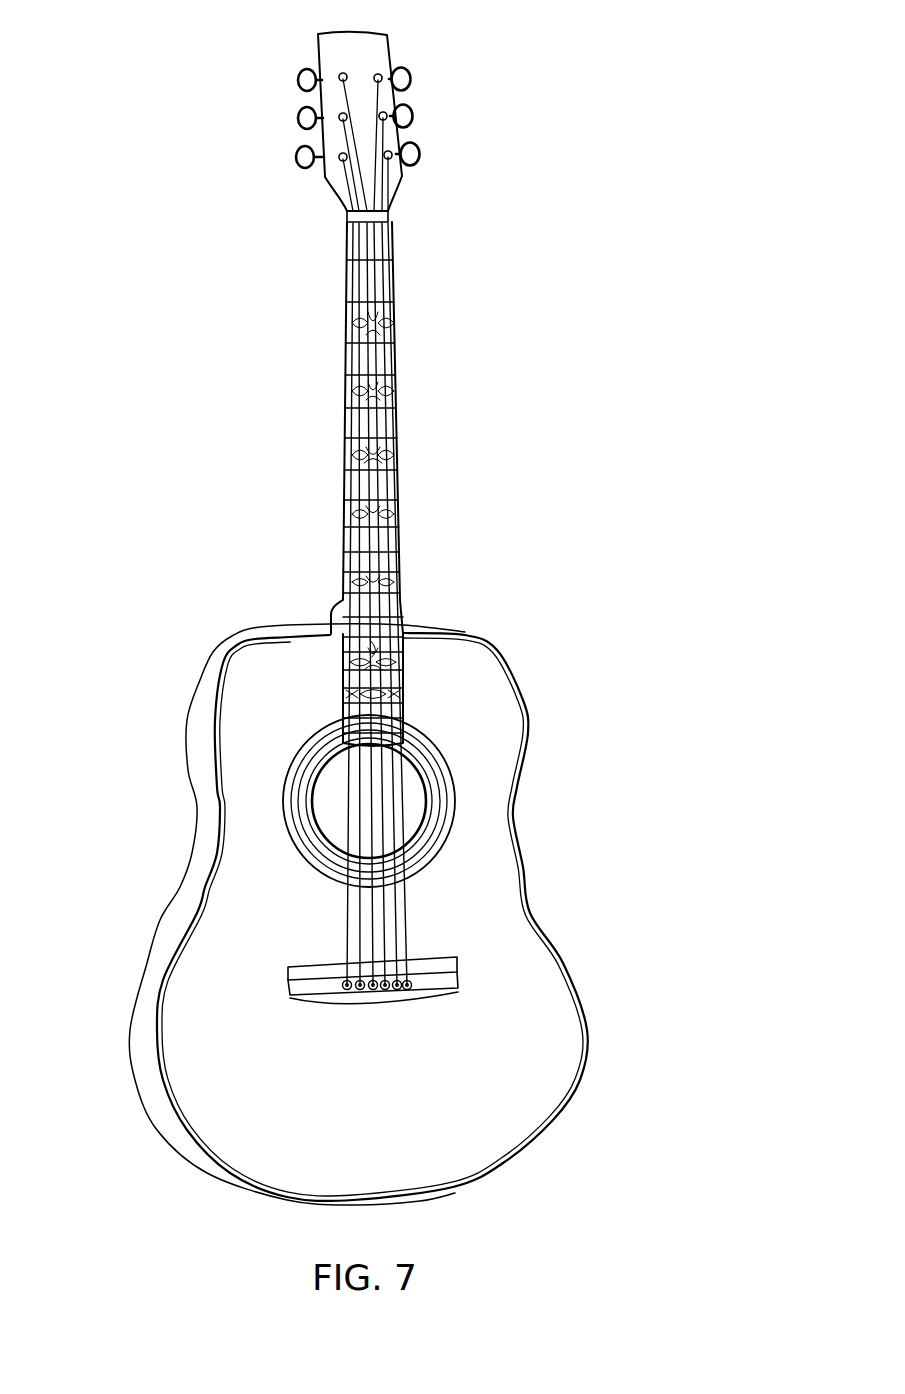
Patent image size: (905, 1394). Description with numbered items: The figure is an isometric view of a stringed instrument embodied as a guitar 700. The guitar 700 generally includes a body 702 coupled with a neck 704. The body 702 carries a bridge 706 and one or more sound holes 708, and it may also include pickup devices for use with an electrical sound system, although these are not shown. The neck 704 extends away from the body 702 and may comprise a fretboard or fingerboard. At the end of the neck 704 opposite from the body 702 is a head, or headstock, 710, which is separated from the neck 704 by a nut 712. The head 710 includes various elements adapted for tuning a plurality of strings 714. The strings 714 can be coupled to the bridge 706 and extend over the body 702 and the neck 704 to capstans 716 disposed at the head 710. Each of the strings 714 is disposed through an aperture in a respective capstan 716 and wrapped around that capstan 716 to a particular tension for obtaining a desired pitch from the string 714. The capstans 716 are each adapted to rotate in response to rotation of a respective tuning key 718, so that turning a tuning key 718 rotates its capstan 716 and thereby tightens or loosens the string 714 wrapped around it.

The guitar 700 is at (140, 288).
The body 702 is at (202, 782).
The neck 704 is at (345, 400).
The bridge 706 is at (290, 992).
The sound hole 708 is at (322, 829).
The head 710 is at (388, 48).
The nut 712 is at (347, 221).
The strings 714 is at (350, 897).
The capstan 716 is at (341, 73).
The tuning key 718 is at (300, 80).